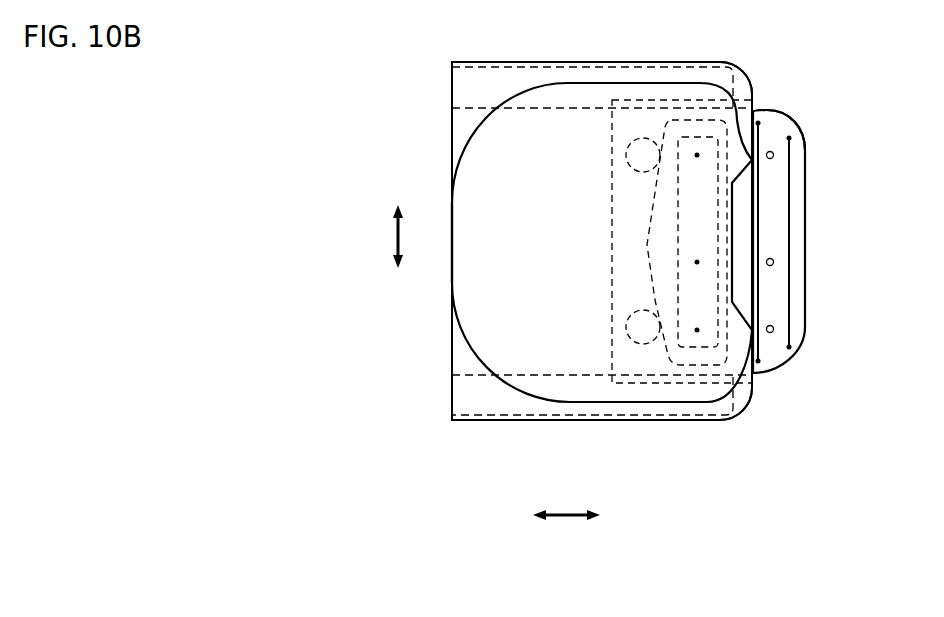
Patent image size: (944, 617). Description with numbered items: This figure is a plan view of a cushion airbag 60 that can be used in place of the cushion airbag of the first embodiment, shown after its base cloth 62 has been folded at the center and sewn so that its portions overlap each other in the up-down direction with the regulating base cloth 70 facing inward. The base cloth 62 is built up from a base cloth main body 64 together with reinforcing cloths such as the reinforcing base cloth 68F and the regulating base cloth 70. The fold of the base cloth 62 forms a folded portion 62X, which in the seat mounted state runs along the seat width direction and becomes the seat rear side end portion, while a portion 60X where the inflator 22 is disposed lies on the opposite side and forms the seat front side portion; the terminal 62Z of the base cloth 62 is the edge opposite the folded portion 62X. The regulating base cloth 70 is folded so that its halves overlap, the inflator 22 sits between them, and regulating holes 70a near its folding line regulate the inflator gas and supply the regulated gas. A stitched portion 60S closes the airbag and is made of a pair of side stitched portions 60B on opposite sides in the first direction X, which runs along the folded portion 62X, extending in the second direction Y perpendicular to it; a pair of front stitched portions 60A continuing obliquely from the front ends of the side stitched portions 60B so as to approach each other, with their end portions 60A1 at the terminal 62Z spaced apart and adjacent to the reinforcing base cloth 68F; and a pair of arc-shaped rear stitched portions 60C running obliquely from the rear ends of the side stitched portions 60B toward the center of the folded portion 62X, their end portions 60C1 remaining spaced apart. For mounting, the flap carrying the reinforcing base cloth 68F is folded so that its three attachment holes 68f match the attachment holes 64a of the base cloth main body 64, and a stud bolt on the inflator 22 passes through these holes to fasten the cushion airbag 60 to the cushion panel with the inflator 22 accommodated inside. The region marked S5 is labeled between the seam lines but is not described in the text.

The cushion airbag 60 is at (653, 450).
The front stitched portions 60A is at (745, 100).
The end portions of the front stitched portions 60A1 is at (756, 152).
The side stitched portions 60B is at (633, 82).
The rear stitched portions 60C is at (490, 122).
The end portions of the rear stitched portions 60C1 is at (452, 205).
The stitched portion 60S is at (577, 82).
The portion where the inflator is disposed 60X is at (672, 223).
The base cloth 62 is at (552, 57).
The folded portion 62X is at (452, 150).
The terminal of the base cloth 62Z is at (753, 150).
The base cloth main body 64 is at (517, 62).
The attachment holes of the base cloth main body 64a is at (697, 156).
The reinforcing base cloth 68F is at (806, 183).
The attachment holes of the reinforcing base cloth 68f is at (773, 158).
The regulating base cloth 70 is at (606, 289).
The regulating holes 70a is at (628, 147).
The inflator 22 is at (675, 212).
The space between seams S5 is at (760, 217).
The first direction X is at (396, 245).
The second direction Y is at (566, 518).